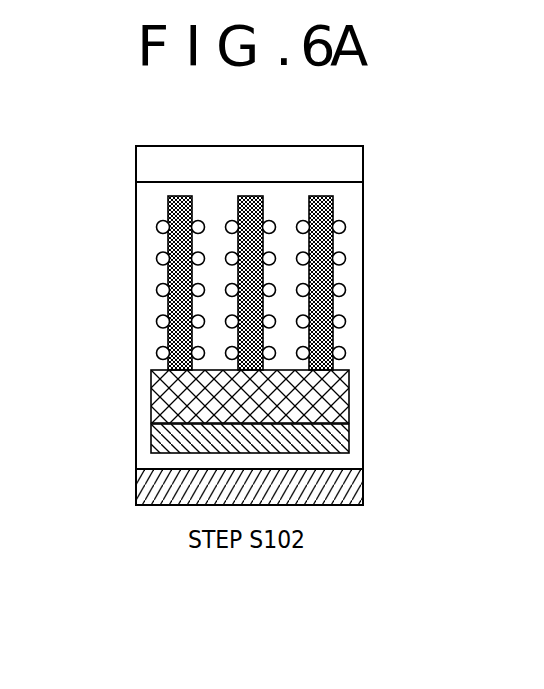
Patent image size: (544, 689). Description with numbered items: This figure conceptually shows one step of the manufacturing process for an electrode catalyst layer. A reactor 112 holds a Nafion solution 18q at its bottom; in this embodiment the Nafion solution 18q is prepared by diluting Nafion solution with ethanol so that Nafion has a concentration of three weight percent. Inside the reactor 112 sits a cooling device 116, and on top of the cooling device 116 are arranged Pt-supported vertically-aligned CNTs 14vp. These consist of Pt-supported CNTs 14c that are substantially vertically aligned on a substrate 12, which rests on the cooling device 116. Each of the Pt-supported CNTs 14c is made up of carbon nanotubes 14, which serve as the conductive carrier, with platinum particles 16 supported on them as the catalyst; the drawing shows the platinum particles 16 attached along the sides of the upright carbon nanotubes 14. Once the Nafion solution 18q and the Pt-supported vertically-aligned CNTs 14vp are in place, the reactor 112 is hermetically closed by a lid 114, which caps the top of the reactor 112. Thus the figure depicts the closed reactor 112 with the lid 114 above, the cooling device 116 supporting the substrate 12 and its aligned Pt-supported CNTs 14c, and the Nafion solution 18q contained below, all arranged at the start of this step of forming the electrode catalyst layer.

The lid 114 is at (357, 160).
The reactor 112 is at (364, 288).
The carbon nanotubes 14 is at (333, 341).
The platinum particles 16 is at (344, 357).
The Pt-supported CNTs 14c is at (313, 294).
The Pt-supported vertically-aligned CNTs 14vp is at (344, 311).
The substrate 12 is at (349, 398).
The cooling device 116 is at (349, 437).
The Nafion solution 18q is at (140, 496).